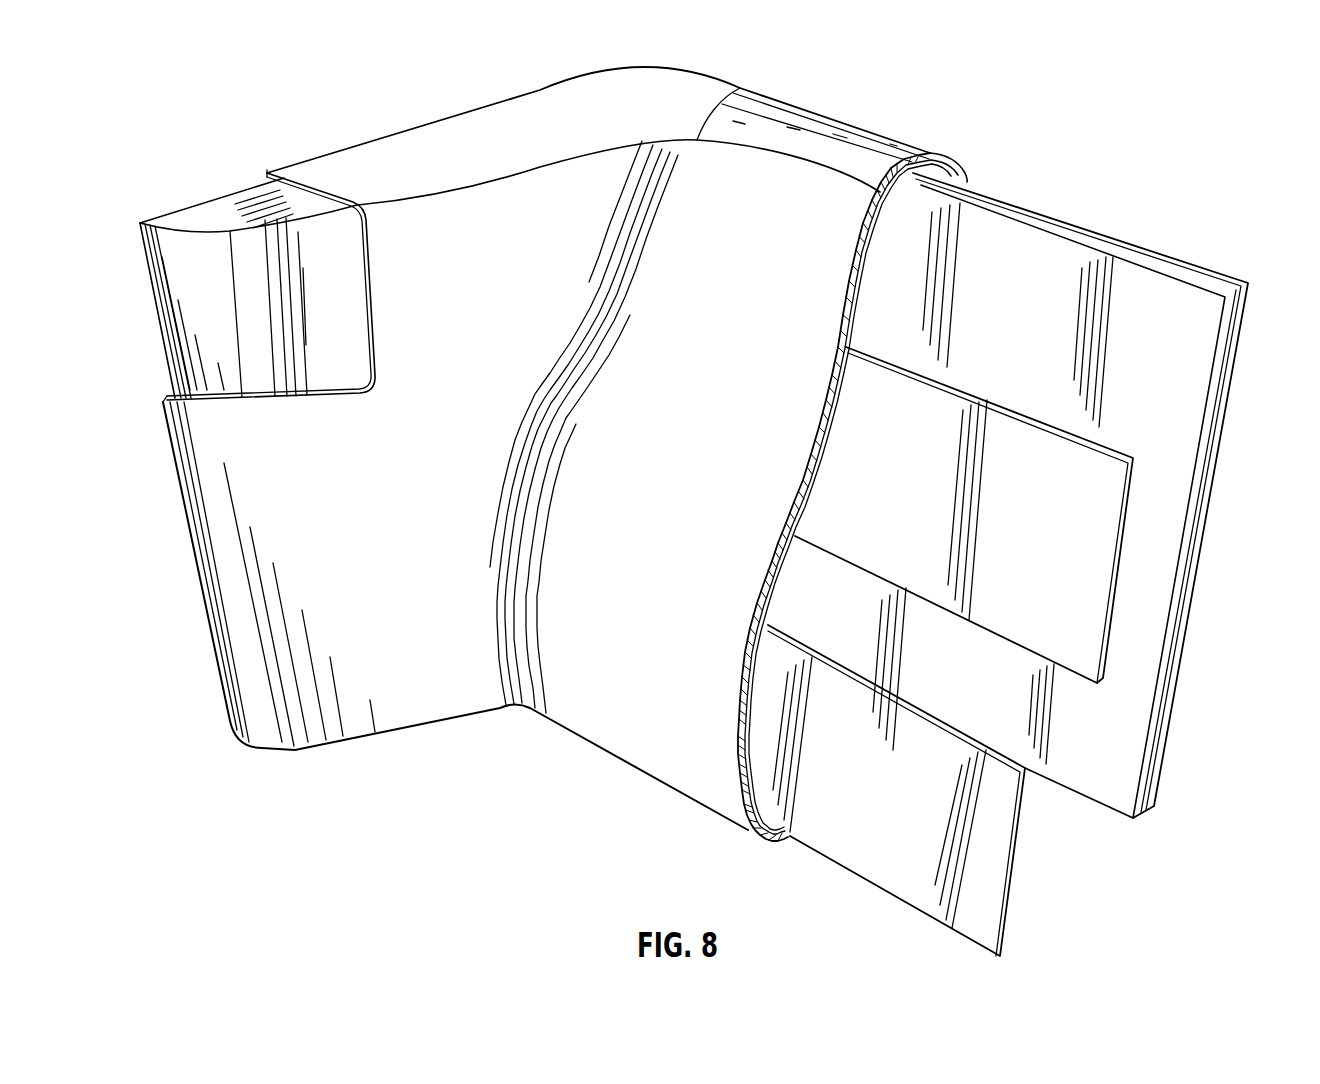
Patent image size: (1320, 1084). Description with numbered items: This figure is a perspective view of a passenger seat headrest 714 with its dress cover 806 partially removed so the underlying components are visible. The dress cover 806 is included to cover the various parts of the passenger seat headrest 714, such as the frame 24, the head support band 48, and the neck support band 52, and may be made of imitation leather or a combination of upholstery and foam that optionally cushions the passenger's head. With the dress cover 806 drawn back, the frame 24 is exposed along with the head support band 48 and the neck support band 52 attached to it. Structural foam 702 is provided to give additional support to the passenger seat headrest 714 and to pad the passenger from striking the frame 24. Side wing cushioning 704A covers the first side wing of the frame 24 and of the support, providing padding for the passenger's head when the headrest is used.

The dress cover 806 is at (525, 110).
The passenger seat headrest 714 is at (903, 120).
The side wing cushioning 704A is at (187, 222).
The structural foam 702 is at (1043, 250).
The frame 24 is at (1213, 267).
The head support band 48 is at (1083, 658).
The neck support band 52 is at (997, 926).